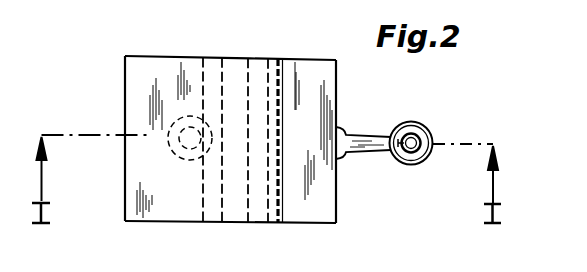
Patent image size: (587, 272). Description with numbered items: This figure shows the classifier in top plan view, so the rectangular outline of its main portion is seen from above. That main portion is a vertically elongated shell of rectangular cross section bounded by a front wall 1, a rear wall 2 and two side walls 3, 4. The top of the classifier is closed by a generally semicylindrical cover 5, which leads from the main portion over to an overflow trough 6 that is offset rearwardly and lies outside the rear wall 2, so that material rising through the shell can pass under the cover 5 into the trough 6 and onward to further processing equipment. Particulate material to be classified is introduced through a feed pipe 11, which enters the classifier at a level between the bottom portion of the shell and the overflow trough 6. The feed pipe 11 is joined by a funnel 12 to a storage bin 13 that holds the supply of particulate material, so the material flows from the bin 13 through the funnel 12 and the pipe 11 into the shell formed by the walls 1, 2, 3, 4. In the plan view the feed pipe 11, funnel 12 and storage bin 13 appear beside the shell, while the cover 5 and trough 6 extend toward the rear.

The front wall 1 is at (125, 192).
The rear wall 2 is at (278, 183).
The side wall 3 is at (303, 59).
The side wall 4 is at (165, 222).
The semicylindrical cover 5 is at (145, 75).
The overflow trough 6 is at (336, 81).
The feed pipe 11 is at (356, 141).
The funnel 12 is at (425, 137).
The storage bin 13 is at (412, 124).